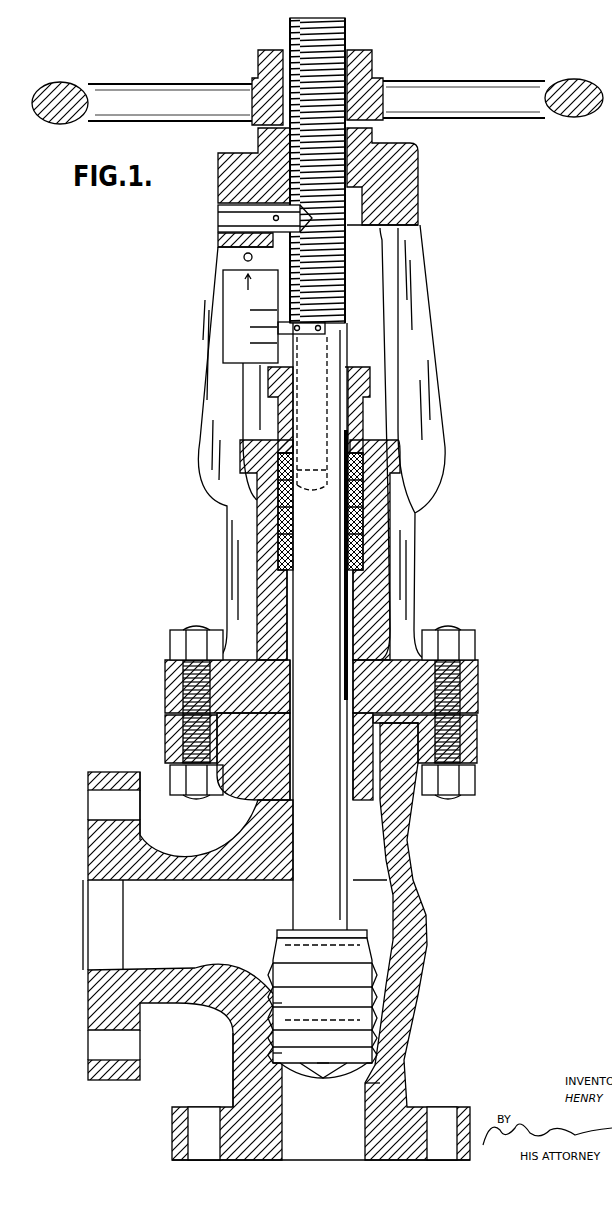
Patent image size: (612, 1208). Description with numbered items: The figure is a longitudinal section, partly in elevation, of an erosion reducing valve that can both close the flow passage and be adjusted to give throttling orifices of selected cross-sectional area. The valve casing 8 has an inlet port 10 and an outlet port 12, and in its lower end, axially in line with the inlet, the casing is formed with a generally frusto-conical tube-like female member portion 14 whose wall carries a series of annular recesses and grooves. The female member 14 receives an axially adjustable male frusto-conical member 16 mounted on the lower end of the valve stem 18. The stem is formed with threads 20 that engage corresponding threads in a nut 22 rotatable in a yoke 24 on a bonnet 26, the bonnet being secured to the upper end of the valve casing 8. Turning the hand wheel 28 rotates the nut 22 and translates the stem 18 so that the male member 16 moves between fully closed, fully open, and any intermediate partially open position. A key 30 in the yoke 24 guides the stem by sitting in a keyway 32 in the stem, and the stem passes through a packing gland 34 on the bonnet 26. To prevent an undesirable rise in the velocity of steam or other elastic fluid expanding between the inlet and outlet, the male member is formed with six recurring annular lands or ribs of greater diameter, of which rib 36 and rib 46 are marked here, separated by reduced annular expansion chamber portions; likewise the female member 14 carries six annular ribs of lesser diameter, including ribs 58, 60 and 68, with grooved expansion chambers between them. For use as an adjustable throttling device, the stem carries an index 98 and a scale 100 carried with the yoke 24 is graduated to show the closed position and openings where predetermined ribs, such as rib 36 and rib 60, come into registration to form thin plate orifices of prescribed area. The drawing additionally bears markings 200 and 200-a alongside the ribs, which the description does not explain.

The valve casing 8 is at (410, 913).
The inlet port 10 is at (360, 1150).
The outlet port 12 is at (97, 883).
The female member portion 14 is at (247, 1060).
The male frusto-conical member 16 is at (323, 1068).
The valve stem 18 is at (333, 850).
The threads 20 is at (340, 264).
The nut 22 is at (350, 153).
The yoke 24 is at (415, 332).
The bonnet 26 is at (383, 677).
The hand wheel 28 is at (163, 98).
The key 30 is at (283, 210).
The keyway 32 is at (295, 233).
The packing gland 34 is at (290, 422).
The rib 36 is at (333, 1068).
The rib 46 is at (380, 955).
The rib 58 is at (370, 1088).
The rib 60 is at (273, 1053).
The rib 68 is at (273, 1007).
The index 98 is at (290, 327).
The scale 100 is at (222, 335).
The flow area marking 200 is at (370, 1062).
The flow area marking a 200-a is at (372, 1042).